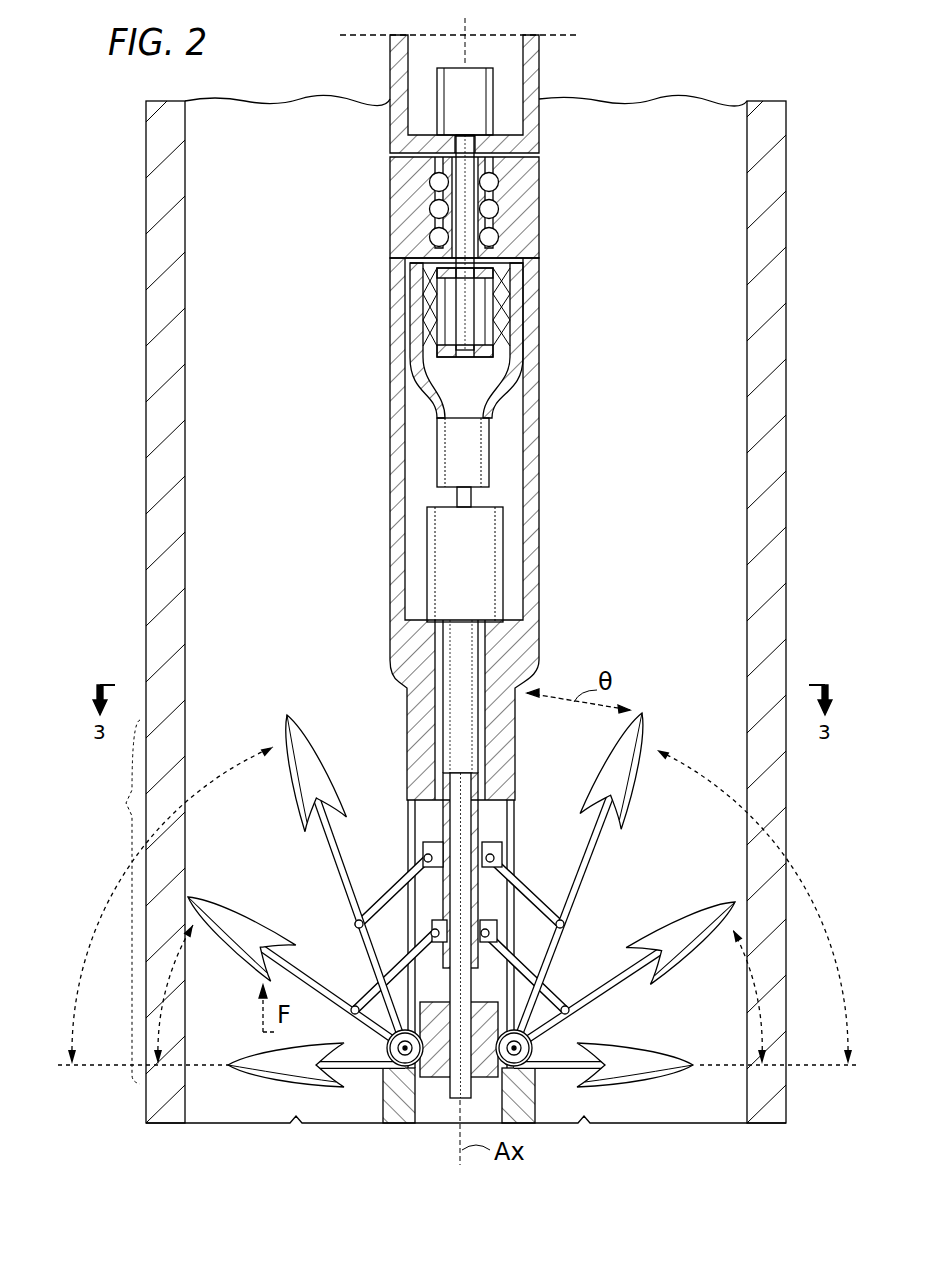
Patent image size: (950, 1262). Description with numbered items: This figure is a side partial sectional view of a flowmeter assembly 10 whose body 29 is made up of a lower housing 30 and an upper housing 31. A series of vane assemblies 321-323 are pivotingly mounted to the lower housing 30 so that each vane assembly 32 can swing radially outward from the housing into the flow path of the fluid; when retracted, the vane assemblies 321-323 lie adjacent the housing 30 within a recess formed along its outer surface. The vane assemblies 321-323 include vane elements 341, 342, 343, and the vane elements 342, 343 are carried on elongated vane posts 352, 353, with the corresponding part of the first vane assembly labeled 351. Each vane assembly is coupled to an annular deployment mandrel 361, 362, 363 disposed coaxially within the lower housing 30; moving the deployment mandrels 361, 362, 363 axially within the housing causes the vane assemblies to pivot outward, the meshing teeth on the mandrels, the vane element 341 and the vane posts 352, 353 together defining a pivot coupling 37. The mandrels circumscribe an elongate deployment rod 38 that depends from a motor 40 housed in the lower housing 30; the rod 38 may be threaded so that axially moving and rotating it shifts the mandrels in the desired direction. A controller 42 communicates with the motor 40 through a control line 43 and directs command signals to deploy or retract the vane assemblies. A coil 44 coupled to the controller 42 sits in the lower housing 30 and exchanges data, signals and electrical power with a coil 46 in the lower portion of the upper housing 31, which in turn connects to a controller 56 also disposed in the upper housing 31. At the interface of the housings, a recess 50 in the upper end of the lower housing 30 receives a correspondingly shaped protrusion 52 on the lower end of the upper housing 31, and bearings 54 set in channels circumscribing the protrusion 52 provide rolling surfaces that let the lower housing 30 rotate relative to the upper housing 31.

The flowmeter assembly 10 is at (318, 357).
The body 29 is at (372, 292).
The lower housing 30 is at (532, 397).
The upper housing 31 is at (541, 75).
The vane assembly 32 is at (388, 693).
The vane assemblies 321-323 is at (86, 902).
The pivot coupling 37 is at (383, 1072).
The elongate deployment rod 38 is at (466, 665).
The motor 40 is at (492, 556).
The controller 42 is at (457, 449).
The control line 43 is at (472, 498).
The coil 44 is at (505, 335).
The coil 46 is at (465, 148).
The recess 50 is at (495, 186).
The protrusion 52 is at (436, 178).
The bearings 54 is at (490, 298).
The controller 56 is at (458, 90).
The vane element 341 is at (654, 1050).
The vane element 342 is at (688, 910).
The vane element 343 is at (636, 793).
The first left blade 351 is at (244, 1056).
The vane post 352 is at (233, 905).
The vane post 353 is at (325, 764).
The deployment mandrel 361 is at (484, 1000).
The deployment mandrel 362 is at (482, 925).
The deployment mandrel 363 is at (492, 840).